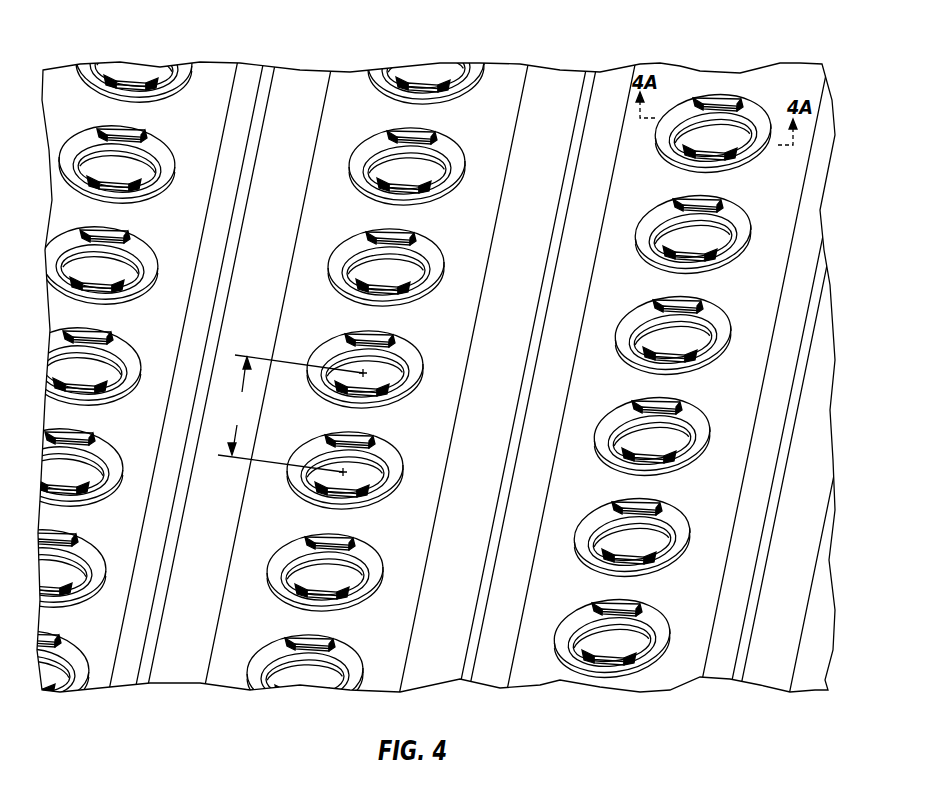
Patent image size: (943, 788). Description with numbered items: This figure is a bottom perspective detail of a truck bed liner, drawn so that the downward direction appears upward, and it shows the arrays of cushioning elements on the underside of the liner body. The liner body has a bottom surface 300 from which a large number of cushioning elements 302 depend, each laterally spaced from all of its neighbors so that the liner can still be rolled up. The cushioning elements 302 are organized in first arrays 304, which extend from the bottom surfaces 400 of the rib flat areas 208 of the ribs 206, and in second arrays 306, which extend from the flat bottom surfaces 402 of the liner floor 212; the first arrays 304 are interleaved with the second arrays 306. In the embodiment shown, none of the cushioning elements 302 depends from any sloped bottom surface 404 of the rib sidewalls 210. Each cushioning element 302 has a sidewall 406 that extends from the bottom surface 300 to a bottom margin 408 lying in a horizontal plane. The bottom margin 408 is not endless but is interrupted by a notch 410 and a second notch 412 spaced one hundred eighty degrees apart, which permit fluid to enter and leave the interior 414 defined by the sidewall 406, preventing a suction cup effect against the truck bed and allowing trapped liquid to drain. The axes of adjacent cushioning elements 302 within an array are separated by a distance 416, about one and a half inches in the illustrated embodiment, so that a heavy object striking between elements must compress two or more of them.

The ribs 206 is at (442, 449).
The rib flat areas 208 is at (272, 631).
The rib sidewalls 210 is at (223, 572).
The liner floor 212 is at (151, 440).
The bottom surface 300 is at (301, 203).
The cushioning element 302 is at (340, 250).
The first arrays 304 is at (438, 255).
The second arrays 306 is at (155, 177).
The bottom surfaces 400 is at (457, 345).
The flat bottom surfaces 402 is at (591, 509).
The sloped bottom surface 404 is at (247, 78).
The sidewall 406 is at (373, 598).
The bottom margin 408 is at (370, 568).
The notch 410 is at (320, 600).
The second notch 412 is at (338, 541).
The interior 414 is at (425, 170).
The distance 416 is at (292, 415).